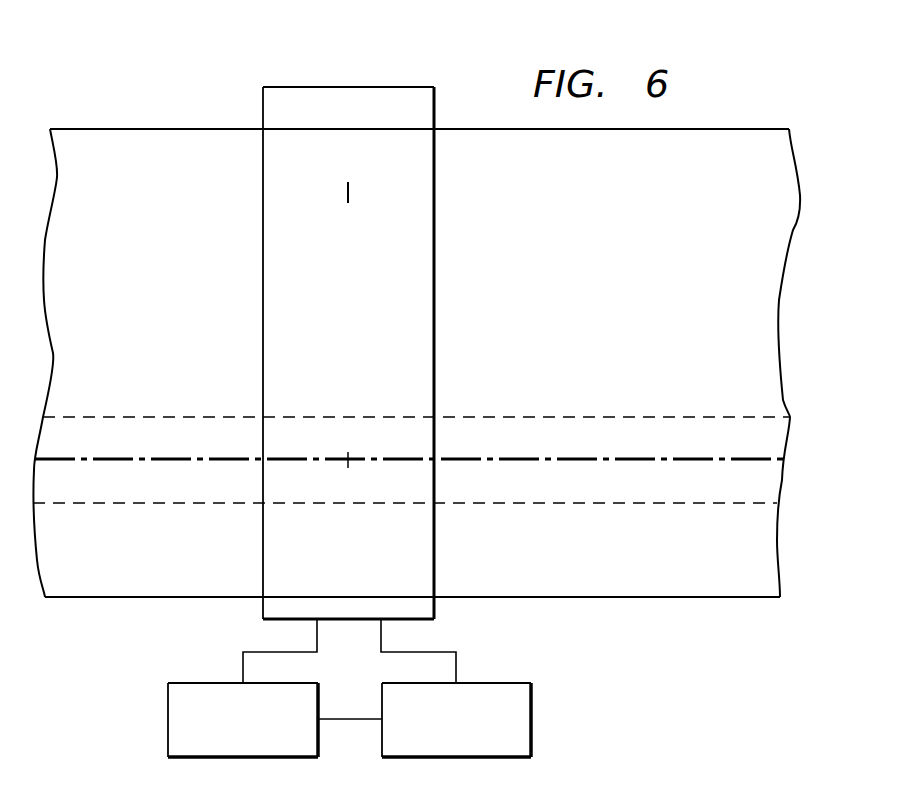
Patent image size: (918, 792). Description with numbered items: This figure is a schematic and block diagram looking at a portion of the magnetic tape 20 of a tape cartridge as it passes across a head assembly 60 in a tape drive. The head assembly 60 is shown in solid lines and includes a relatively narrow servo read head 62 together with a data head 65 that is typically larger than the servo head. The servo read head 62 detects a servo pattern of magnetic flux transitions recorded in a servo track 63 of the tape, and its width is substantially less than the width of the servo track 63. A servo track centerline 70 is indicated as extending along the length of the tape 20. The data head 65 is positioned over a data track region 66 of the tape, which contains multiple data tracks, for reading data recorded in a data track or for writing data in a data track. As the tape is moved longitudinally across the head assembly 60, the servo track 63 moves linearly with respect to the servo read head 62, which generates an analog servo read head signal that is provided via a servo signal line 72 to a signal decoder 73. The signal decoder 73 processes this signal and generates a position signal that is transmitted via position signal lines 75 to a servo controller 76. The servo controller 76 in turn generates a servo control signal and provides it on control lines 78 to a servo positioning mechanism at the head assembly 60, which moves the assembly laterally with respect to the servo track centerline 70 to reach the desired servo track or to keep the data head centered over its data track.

The magnetic tape 20 is at (125, 129).
The head assembly 60 is at (317, 86).
The servo read head 62 is at (346, 458).
The servo track 63 is at (579, 404).
The data head 65 is at (346, 192).
The data track region 66 is at (651, 237).
The servo track centerline 70 is at (783, 459).
The servo signal line 72 is at (243, 668).
The signal decoder 73 is at (168, 725).
The position signal lines 75 is at (346, 720).
The servo controller 76 is at (531, 725).
The control lines 78 is at (456, 668).